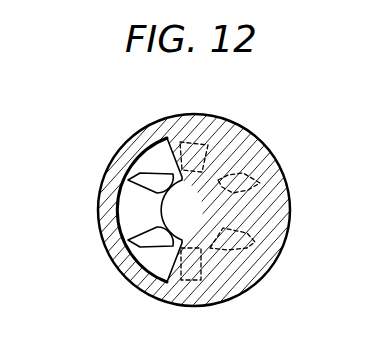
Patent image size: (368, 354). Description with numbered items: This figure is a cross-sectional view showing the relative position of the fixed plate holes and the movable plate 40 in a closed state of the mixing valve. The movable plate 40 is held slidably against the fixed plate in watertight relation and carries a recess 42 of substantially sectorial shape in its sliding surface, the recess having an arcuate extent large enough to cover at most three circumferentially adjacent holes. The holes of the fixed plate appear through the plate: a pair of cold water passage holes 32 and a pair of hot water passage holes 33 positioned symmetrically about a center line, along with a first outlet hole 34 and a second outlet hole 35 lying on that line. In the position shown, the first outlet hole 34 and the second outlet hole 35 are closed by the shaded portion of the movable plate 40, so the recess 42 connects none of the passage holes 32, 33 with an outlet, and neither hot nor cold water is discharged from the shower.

The movable plate 40 is at (288, 208).
The recess 42 is at (130, 207).
The cold water passage holes 32 is at (140, 173).
The hot water passage holes 33 is at (243, 177).
The first outlet hole 34 is at (200, 143).
The second outlet hole 35 is at (202, 277).